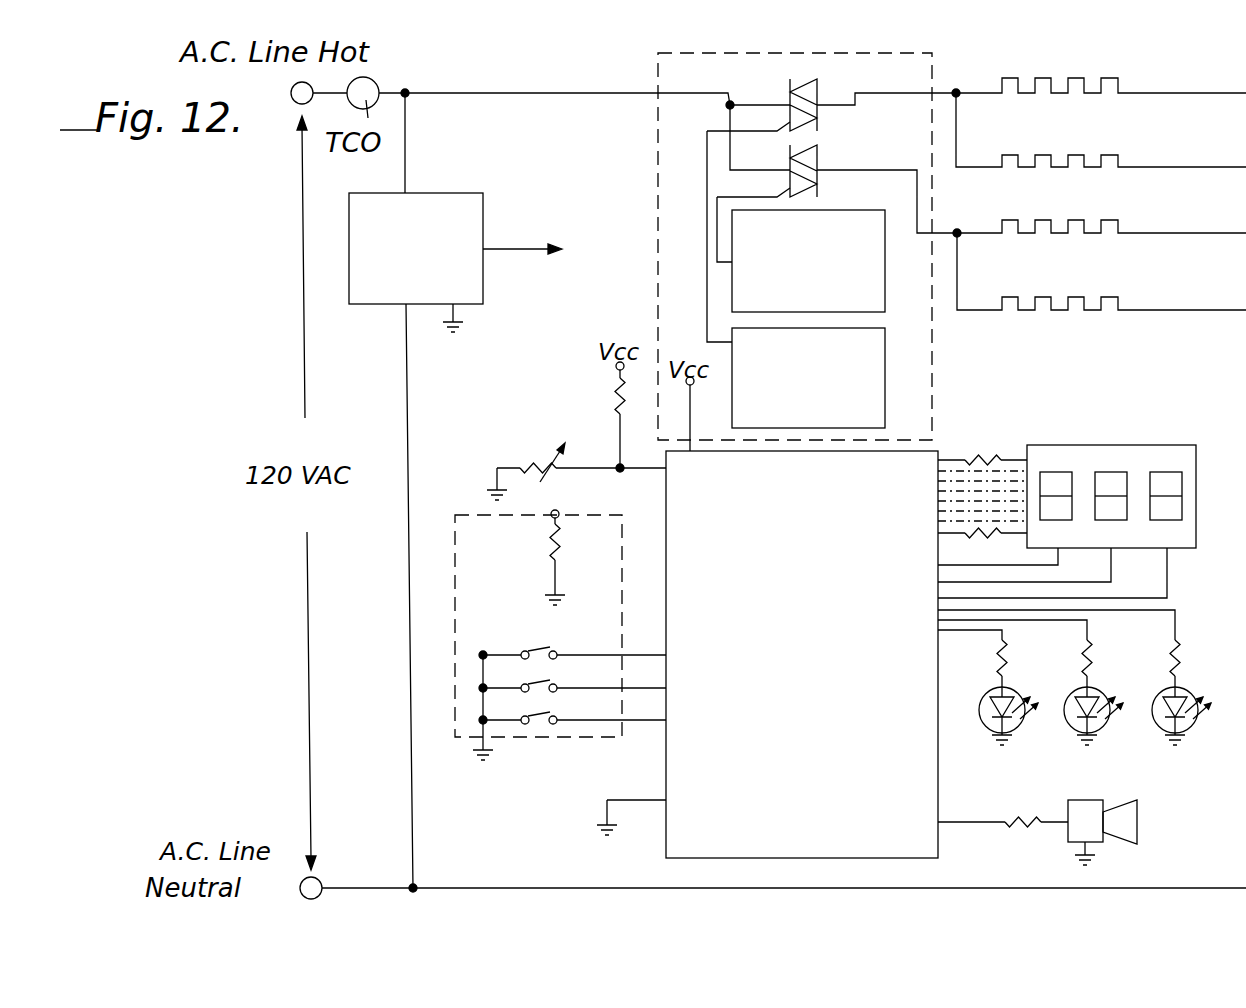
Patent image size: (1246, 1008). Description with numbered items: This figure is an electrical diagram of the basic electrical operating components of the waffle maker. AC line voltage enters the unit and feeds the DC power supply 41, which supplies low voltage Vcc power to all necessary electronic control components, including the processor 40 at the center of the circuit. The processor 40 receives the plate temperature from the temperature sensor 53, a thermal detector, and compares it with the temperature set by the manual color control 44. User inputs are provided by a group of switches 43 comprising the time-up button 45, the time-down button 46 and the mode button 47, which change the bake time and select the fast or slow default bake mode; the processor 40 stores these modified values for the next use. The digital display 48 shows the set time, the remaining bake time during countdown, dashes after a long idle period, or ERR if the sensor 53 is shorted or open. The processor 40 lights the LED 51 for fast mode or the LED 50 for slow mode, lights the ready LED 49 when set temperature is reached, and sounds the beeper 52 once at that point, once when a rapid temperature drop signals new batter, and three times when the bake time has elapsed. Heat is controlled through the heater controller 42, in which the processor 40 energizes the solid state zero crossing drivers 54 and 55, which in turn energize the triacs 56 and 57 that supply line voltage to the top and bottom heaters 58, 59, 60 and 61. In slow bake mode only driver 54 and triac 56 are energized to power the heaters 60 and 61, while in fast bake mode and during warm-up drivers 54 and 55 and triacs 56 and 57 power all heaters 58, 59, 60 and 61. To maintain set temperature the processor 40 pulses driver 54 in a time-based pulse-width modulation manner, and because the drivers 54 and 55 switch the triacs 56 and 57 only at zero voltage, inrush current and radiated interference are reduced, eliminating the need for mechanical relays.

The processor 40 is at (686, 836).
The DC power supply 41 is at (368, 304).
The heater controller 42 is at (682, 150).
The switch assembly 43 is at (590, 728).
The color control 44 is at (552, 545).
The time-up button 45 is at (526, 648).
The time-down button 46 is at (530, 682).
The mode button 47 is at (540, 715).
The digital display 48 is at (1140, 455).
The ready LED 49 is at (992, 725).
The LED 50 is at (1073, 725).
The LED 51 is at (1160, 725).
The beeper 52 is at (1075, 830).
The temperature sensor 53 is at (540, 465).
The zero crossing driver 54 is at (872, 352).
The zero crossing driver 55 is at (874, 244).
The triac 56 is at (820, 120).
The triac 57 is at (820, 153).
The top heater 58 is at (1120, 82).
The top heater 59 is at (1120, 222).
The bottom heater 60 is at (1120, 156).
The bottom heater 61 is at (1120, 298).